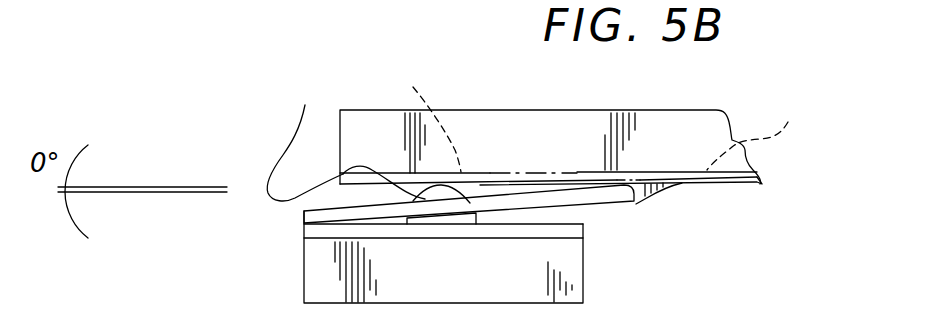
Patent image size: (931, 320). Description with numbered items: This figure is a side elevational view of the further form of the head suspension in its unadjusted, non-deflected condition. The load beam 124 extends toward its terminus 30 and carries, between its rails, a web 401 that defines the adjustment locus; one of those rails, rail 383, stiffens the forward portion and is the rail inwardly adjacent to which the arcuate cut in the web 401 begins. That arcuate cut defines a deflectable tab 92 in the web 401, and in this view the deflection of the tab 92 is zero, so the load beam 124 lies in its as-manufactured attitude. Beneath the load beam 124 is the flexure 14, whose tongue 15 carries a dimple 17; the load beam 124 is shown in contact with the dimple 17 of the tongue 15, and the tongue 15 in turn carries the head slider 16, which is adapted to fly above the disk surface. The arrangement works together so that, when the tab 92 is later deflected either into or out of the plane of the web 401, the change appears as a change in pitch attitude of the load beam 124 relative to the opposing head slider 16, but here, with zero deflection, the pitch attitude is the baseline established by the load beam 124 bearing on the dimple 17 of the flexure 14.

The flexure 14 is at (311, 214).
The tongue 15 is at (302, 233).
The slider 16 is at (585, 258).
The dimple 17 is at (342, 175).
The terminus 30 is at (305, 139).
The tab 92 is at (427, 116).
The load beam 124 is at (543, 110).
The rail 383 is at (573, 117).
The web 401 is at (762, 132).